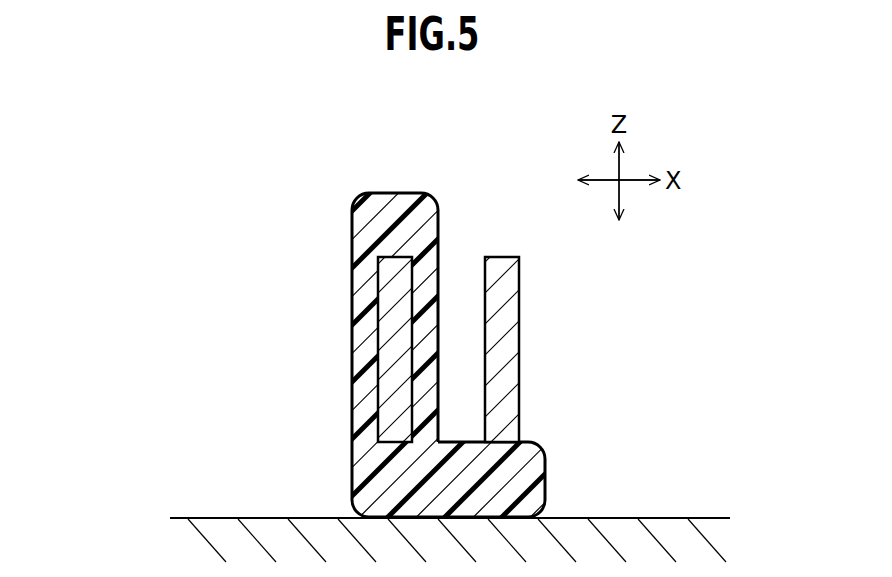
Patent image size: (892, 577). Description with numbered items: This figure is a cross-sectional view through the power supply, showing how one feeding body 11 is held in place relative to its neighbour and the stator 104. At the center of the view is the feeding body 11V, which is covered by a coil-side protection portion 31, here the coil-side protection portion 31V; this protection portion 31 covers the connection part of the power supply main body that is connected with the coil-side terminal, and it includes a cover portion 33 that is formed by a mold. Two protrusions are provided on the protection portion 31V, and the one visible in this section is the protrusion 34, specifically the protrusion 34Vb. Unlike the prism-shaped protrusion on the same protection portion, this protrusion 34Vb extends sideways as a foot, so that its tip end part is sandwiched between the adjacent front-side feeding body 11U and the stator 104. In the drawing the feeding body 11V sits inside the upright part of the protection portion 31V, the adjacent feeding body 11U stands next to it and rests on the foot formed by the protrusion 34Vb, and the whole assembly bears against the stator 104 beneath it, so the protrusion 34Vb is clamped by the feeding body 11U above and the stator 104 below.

The feeding body 11 is at (449, 338).
The feeding body 11V is at (390, 302).
The feeding body 11U is at (511, 352).
The coil-side protection portion 31 is at (446, 338).
The coil-side protection portion 31V is at (446, 338).
The cover portion 33 is at (428, 230).
The protrusion 34 is at (528, 479).
The protrusion 34Vb is at (537, 492).
The stator 104 is at (230, 509).